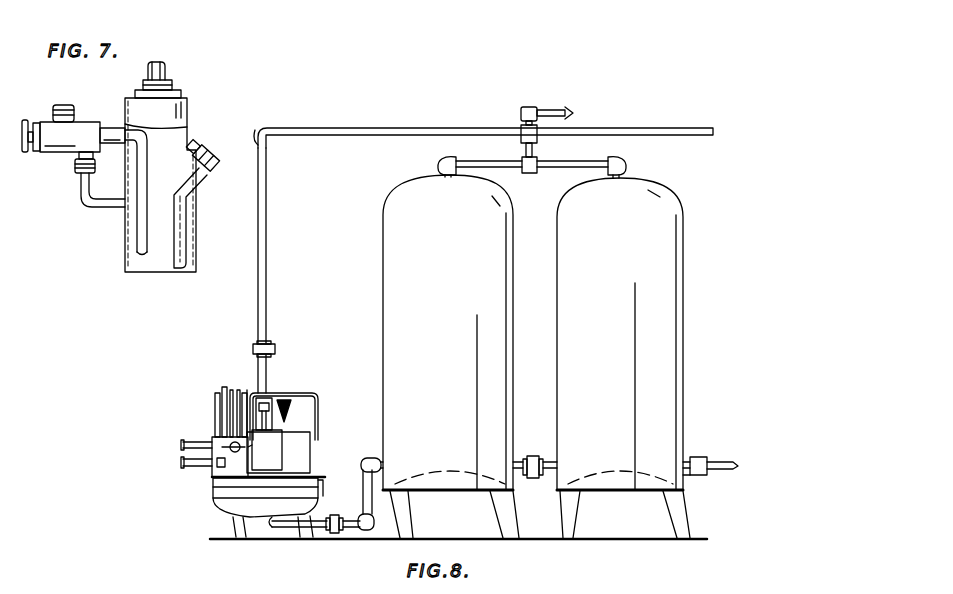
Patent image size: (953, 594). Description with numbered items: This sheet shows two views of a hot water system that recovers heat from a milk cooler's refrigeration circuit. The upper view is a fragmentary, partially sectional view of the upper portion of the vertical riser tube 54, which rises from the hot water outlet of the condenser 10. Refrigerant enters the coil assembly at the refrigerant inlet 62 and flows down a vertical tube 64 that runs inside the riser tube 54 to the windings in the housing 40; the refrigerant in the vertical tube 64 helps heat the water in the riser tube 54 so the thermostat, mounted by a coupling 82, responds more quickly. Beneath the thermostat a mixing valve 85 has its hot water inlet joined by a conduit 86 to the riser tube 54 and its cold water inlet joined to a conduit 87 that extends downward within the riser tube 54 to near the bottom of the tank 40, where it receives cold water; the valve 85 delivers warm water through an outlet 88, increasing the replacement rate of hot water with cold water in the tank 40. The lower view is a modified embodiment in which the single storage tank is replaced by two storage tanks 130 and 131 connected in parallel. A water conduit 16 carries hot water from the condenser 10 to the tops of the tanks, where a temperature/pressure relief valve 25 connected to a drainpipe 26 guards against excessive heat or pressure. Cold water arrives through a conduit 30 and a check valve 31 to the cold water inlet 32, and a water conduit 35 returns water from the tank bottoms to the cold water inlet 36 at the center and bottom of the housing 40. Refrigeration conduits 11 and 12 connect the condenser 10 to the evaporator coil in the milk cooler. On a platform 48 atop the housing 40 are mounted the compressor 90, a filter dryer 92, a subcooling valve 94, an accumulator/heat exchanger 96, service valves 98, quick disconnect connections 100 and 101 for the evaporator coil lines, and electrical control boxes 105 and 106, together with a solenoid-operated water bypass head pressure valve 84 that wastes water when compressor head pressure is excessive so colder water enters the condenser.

In FIG. 8, the condenser 10 is at (212, 388).
In FIG. 8, the refrigeration conduit 11 is at (178, 441).
In FIG. 8, the refrigeration conduit 12 is at (184, 470).
In FIG. 7, the water conduit 16 is at (163, 63).
In FIG. 8, the water conduit 16 is at (358, 128).
In FIG. 8, the temperature/pressure relief valve 25 is at (523, 107).
In FIG. 8, the drainpipe 26 is at (561, 110).
In FIG. 8, the conduit 30 is at (731, 462).
In FIG. 8, the check valve 31 is at (701, 456).
In FIG. 8, the cold water inlet 32 is at (688, 478).
In FIG. 8, the water conduit 35 is at (363, 494).
In FIG. 8, the cold water inlet 36 is at (265, 524).
In FIG. 8, the housing 40 is at (212, 513).
In FIG. 8, the platform 48 is at (325, 476).
In FIG. 7, the vertical riser tube 54 is at (124, 254).
In FIG. 8, the vertical riser tube 54 is at (271, 398).
In FIG. 7, the refrigerant inlet 62 is at (219, 127).
In FIG. 7, the vertical tube 64 is at (176, 271).
In FIG. 7, the coupling 82 is at (184, 89).
In FIG. 8, the coupling 82 is at (270, 396).
In FIG. 8, the water bypass head pressure valve 84 is at (315, 395).
In FIG. 7, the mixing valve 85 is at (62, 160).
In FIG. 7, the conduit 86 is at (86, 219).
In FIG. 7, the conduit 87 is at (136, 272).
In FIG. 7, the outlet 88 is at (62, 105).
In FIG. 8, the compressor 90 is at (306, 417).
In FIG. 8, the filter dryer 92 is at (244, 392).
In FIG. 8, the subcooling valve 94 is at (250, 448).
In FIG. 8, the accumulator/heat exchanger 96 is at (217, 404).
In FIG. 8, the service valves 98 is at (220, 482).
In FIG. 8, the quick disconnect connection 100 is at (217, 442).
In FIG. 8, the quick disconnect connection 101 is at (208, 472).
In FIG. 8, the electrical control box 105 is at (278, 443).
In FIG. 8, the electrical control box 106 is at (298, 452).
In FIG. 8, the storage tank 130 is at (451, 356).
In FIG. 8, the storage tank 131 is at (623, 358).